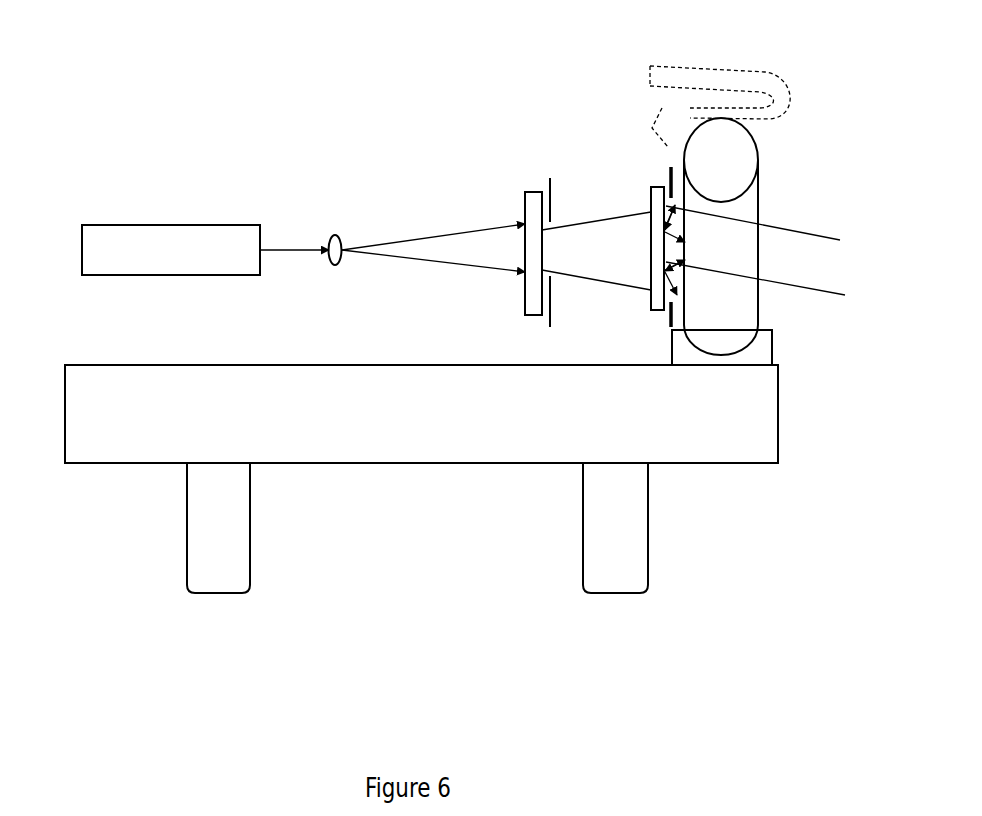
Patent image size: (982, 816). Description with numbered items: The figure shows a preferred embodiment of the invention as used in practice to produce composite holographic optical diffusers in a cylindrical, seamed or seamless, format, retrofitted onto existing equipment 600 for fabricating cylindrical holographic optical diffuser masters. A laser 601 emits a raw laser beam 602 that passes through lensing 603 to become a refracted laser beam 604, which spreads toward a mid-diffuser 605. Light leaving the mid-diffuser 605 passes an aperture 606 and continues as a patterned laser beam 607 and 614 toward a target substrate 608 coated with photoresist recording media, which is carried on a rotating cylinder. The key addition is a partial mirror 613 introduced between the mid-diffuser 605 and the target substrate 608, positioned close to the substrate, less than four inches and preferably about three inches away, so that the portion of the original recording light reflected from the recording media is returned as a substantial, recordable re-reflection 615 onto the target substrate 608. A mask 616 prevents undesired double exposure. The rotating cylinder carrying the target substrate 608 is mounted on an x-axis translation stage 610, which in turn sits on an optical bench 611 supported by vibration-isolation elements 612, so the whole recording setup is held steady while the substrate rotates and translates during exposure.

The existing equipment 600 is at (68, 100).
The laser 601 is at (195, 225).
The raw laser beam 602 is at (285, 240).
The lensing 603 is at (333, 236).
The refracted laser beam 604 is at (475, 230).
The mid-diffuser 605 is at (525, 195).
The aperture 606 is at (550, 178).
The patterned laser beam 607 is at (640, 213).
The target substrate 608 is at (759, 191).
The x-axis translation stage 610 is at (773, 345).
The optical bench 611 is at (410, 467).
The vibration-isolation elements 612 is at (585, 498).
The partial mirror 613 is at (650, 184).
The patterned laser beam 614 is at (779, 229).
The re-reflection 615 is at (781, 288).
The mask 616 is at (670, 318).